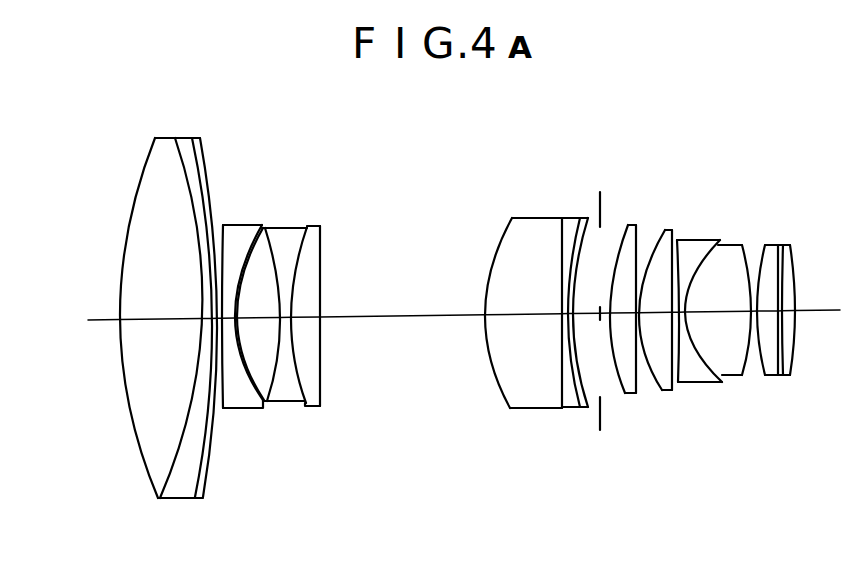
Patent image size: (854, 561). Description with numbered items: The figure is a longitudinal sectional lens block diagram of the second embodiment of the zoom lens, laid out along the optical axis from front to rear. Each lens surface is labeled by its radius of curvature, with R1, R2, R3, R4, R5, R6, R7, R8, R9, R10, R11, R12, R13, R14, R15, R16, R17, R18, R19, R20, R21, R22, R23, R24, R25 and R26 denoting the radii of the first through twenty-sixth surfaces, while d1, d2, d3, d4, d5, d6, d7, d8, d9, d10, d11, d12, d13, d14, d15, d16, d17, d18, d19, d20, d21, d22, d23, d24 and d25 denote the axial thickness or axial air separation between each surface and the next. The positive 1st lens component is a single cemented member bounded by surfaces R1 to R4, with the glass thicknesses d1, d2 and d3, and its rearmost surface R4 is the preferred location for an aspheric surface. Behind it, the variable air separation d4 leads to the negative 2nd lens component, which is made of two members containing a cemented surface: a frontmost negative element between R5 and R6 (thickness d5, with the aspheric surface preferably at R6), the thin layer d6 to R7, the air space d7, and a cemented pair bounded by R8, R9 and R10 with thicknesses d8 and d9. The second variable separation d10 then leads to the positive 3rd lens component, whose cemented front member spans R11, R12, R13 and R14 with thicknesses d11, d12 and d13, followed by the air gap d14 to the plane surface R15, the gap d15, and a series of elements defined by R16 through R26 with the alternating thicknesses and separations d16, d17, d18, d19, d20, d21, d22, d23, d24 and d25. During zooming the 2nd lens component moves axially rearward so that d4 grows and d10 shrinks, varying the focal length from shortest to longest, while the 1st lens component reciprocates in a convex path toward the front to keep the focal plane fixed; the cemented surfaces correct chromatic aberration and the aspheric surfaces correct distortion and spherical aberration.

The radius of curvature of the first surface R1 is at (142, 173).
The radius of curvature of the second surface R2 is at (155, 152).
The radius of curvature of the third surface R3 is at (182, 138).
The radius of curvature of the fourth surface R4 is at (197, 143).
The radius of curvature of the fifth surface R5 is at (223, 223).
The radius of curvature of the sixth surface R6 is at (252, 245).
The radius of curvature of the seventh surface R7 is at (265, 245).
The radius of curvature of the eighth surface R8 is at (287, 238).
The radius of curvature of the ninth surface R9 is at (309, 235).
The radius of curvature of the tenth surface R10 is at (322, 233).
The radius of curvature of the eleventh surface R11 is at (503, 237).
The radius of curvature of the twelfth surface R12 is at (560, 233).
The radius of curvature of the thirteenth surface R13 is at (568, 235).
The radius of curvature of the fourteenth surface R14 is at (582, 218).
The radius of curvature of the fifteenth surface R15 is at (597, 192).
The radius of curvature of the sixteenth surface R16 is at (608, 245).
The radius of curvature of the seventeenth surface R17 is at (627, 233).
The radius of curvature of the eighteenth surface R18 is at (665, 230).
The radius of curvature of the nineteenth surface R19 is at (650, 247).
The radius of curvature of the twentieth surface R20 is at (677, 238).
The radius of curvature of the twenty-first surface R21 is at (700, 268).
The radius of curvature of the twenty-second surface R22 is at (718, 247).
The radius of curvature of the twenty-third surface R23 is at (758, 242).
The radius of curvature of the twenty-fourth surface R24 is at (768, 242).
The radius of curvature of the twenty-fifth surface R25 is at (784, 246).
The radius of curvature of the twenty-sixth surface R26 is at (790, 250).
The axial thickness between the first and second surfaces d1 is at (132, 320).
The axial thickness between the second and third surfaces d2 is at (203, 317).
The axial thickness between the third and fourth surfaces d3 is at (213, 322).
The variable axial air separation between the fourth and fifth surfaces d4 is at (217, 323).
The axial thickness between the fifth and sixth surfaces d5 is at (227, 327).
The axial thickness between the sixth and seventh surfaces d6 is at (235, 320).
The axial air separation between the seventh and eighth surfaces d7 is at (257, 322).
The axial thickness between the eighth and ninth surfaces d8 is at (283, 322).
The axial thickness between the ninth and tenth surfaces d9 is at (303, 322).
The variable axial air separation between the tenth and eleventh surfaces d10 is at (367, 318).
The axial thickness between the eleventh and twelfth surfaces d11 is at (503, 313).
The axial thickness between the twelfth and thirteenth surfaces d12 is at (568, 313).
The axial thickness between the thirteenth and fourteenth surfaces d13 is at (570, 315).
The axial air separation between the fourteenth and fifteenth surfaces d14 is at (583, 313).
The axial air separation between the fifteenth and sixteenth surfaces d15 is at (605, 317).
The axial thickness between the sixteenth and seventeenth surfaces d16 is at (620, 315).
The axial air separation between the seventeenth and eighteenth surfaces d17 is at (641, 313).
The axial thickness between the eighteenth and nineteenth surfaces d18 is at (653, 315).
The axial air separation between the nineteenth and twentieth surfaces d19 is at (685, 311).
The axial thickness between the twentieth and twenty-first surfaces d20 is at (683, 315).
The axial air separation between the twenty-first and twenty-second surfaces d21 is at (712, 315).
The axial thickness between the twenty-second and twenty-third surfaces d22 is at (741, 315).
The axial air separation between the twenty-third and twenty-fourth surfaces d23 is at (757, 313).
The axial thickness between the twenty-fourth and twenty-fifth surfaces d24 is at (778, 314).
The axial thickness between the twenty-fifth and twenty-sixth surfaces d25 is at (795, 314).